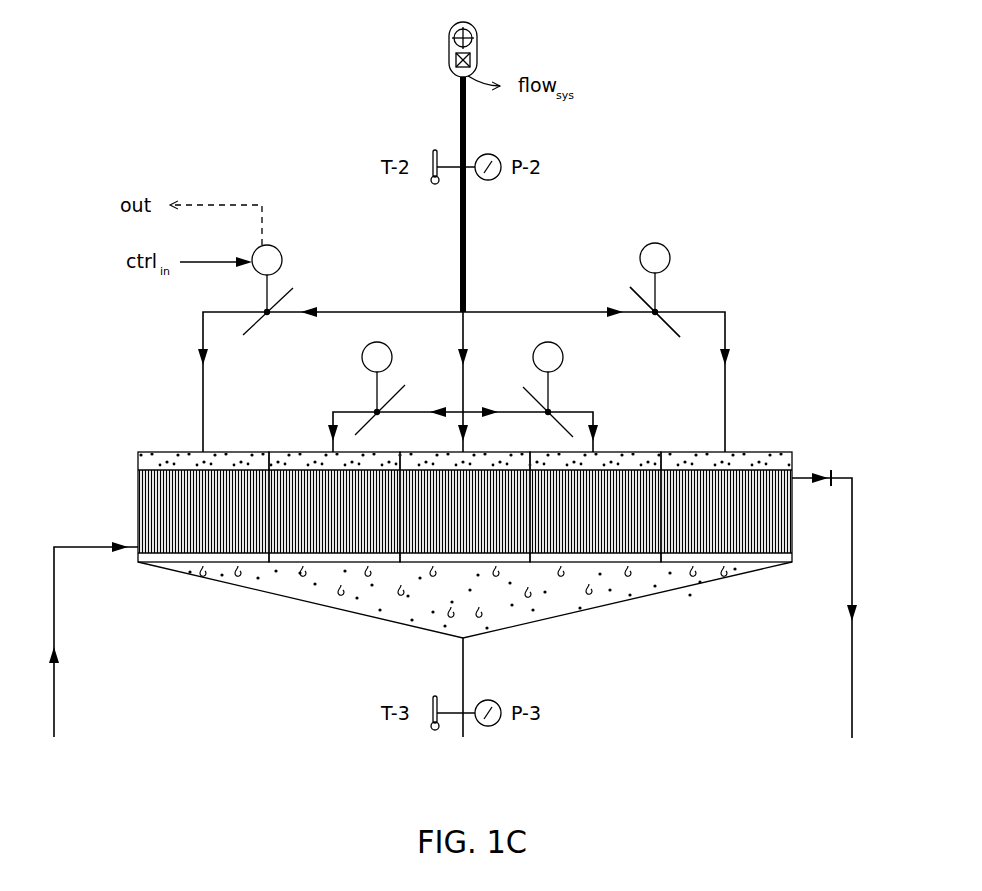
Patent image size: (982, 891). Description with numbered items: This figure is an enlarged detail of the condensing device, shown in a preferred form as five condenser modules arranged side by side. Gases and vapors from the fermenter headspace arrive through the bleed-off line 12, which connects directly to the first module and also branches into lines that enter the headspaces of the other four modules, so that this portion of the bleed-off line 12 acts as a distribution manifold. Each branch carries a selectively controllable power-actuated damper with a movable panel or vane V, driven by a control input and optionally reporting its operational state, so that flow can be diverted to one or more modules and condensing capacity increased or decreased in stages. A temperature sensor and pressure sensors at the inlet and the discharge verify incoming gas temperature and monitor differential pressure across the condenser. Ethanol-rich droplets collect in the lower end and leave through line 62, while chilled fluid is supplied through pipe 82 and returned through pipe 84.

The bleed-off line 12 is at (459, 281).
The movable panel or vane V is at (676, 320).
The line 62 is at (458, 673).
The pipe 82 is at (60, 699).
The pipe 84 is at (846, 701).